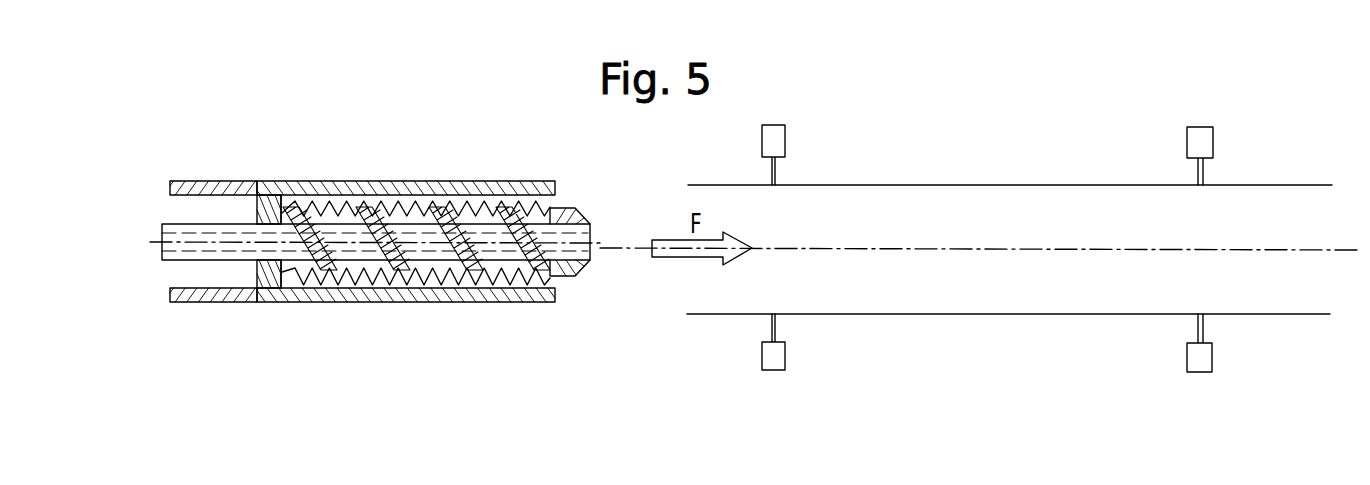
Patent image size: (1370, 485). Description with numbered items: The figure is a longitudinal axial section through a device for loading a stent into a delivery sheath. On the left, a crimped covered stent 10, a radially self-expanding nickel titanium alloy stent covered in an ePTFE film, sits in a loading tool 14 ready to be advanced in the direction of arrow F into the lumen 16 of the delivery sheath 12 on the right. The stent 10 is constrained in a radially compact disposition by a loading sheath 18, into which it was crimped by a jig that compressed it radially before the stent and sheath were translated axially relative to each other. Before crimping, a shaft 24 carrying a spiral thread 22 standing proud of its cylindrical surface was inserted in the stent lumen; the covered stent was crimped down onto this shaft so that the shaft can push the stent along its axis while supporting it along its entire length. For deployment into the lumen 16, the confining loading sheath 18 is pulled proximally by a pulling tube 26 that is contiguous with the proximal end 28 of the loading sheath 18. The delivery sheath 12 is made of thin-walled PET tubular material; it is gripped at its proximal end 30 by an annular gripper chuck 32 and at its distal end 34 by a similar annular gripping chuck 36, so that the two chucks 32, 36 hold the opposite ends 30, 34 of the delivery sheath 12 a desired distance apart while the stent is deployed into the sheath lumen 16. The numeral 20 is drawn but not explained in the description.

The covered stent 10 is at (432, 201).
The delivery sheath 12 is at (1003, 185).
The loading tool 14 is at (206, 158).
The lumen 16 is at (1089, 232).
The loading sheath 18 is at (435, 300).
The spring chamber 20 is at (273, 215).
The spiral thread 22 is at (377, 288).
The shaft 24 is at (166, 223).
The pulling tube 26 is at (218, 298).
The proximal end 28 is at (259, 195).
The proximal end 30 is at (773, 187).
The annular gripper chuck 32 is at (775, 130).
The distal end 34 is at (1200, 187).
The annular gripping chuck 36 is at (1202, 135).